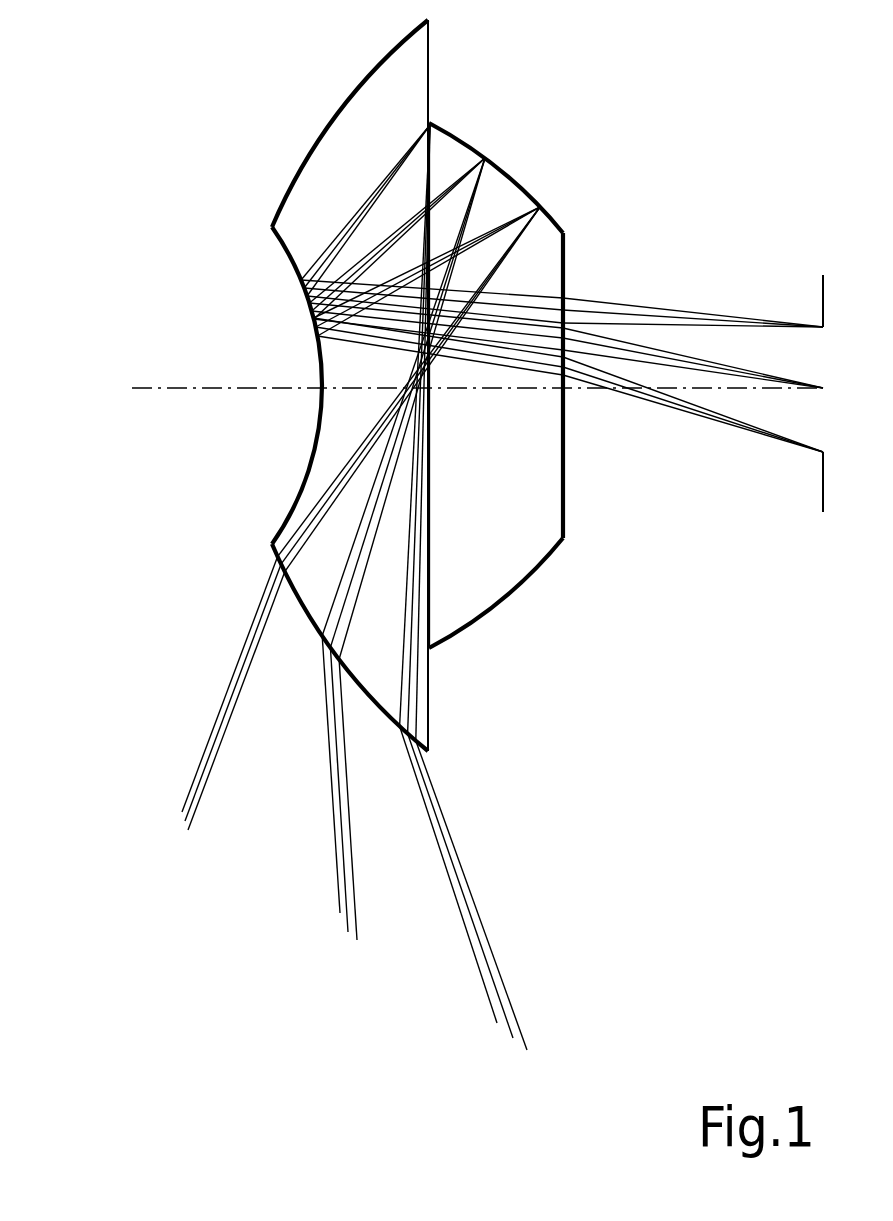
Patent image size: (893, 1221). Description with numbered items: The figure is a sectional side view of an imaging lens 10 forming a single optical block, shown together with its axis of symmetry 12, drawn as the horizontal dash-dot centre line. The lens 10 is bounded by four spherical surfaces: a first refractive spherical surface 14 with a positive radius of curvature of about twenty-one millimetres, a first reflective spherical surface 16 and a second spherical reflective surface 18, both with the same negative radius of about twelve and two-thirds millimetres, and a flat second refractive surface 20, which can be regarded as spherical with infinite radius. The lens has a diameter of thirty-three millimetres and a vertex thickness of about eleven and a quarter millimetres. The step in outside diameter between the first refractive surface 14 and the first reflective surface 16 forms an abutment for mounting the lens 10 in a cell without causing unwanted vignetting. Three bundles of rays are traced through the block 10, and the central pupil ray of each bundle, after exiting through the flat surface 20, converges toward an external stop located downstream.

The imaging lens 10 is at (420, 525).
The axis of symmetry 12 is at (173, 386).
The first refractive spherical surface 14 is at (340, 93).
The first reflective spherical surface 16 is at (527, 182).
The second spherical reflective surface 18 is at (315, 433).
The flat second refractive surface 20 is at (567, 462).